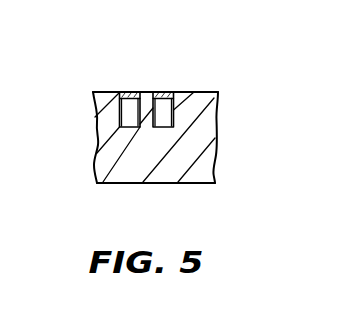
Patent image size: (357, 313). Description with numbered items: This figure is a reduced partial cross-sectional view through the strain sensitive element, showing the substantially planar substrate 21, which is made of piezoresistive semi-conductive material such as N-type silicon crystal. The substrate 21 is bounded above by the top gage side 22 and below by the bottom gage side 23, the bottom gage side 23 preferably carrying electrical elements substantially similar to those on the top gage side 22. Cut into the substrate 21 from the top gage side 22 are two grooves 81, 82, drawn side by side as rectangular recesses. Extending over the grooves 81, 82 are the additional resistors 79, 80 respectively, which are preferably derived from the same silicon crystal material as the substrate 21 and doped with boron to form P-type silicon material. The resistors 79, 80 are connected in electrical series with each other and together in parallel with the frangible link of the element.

The substrate 21 is at (204, 129).
The top gage side 22 is at (200, 92).
The bottom gage side 23 is at (193, 184).
The resistor 79 is at (126, 92).
The resistor 80 is at (163, 91).
The groove 81 is at (121, 118).
The groove 82 is at (162, 118).